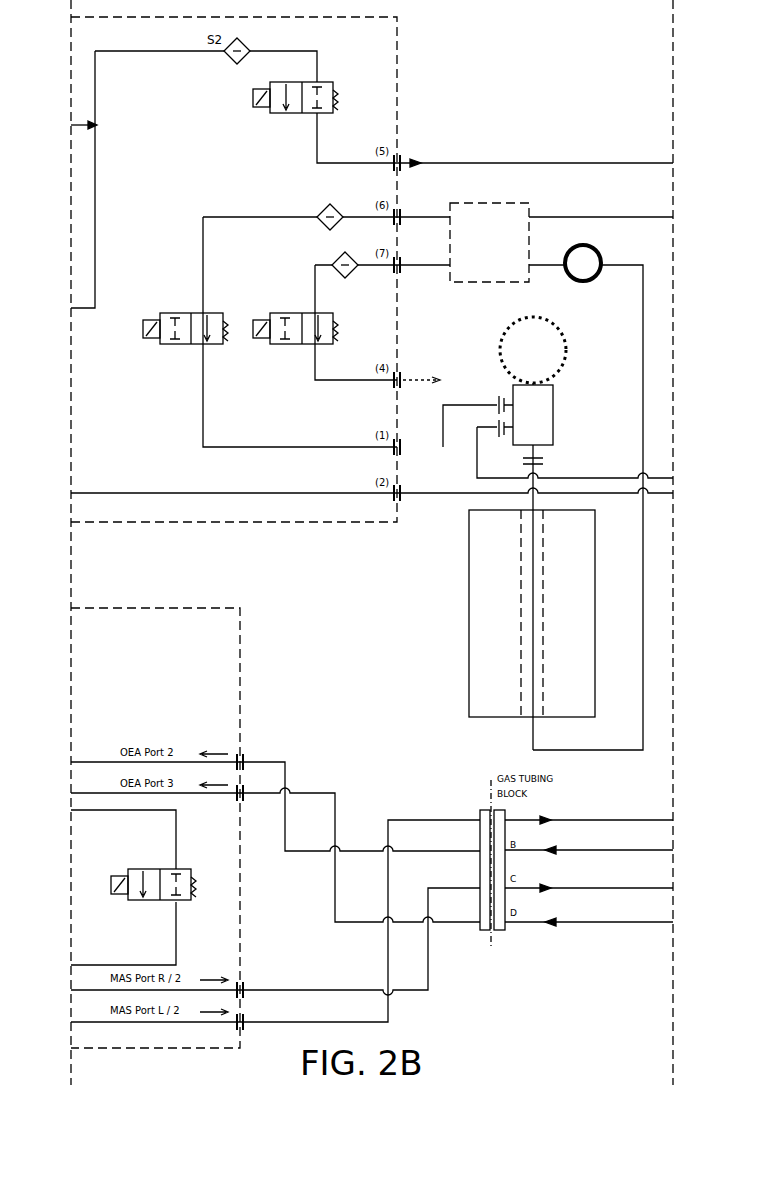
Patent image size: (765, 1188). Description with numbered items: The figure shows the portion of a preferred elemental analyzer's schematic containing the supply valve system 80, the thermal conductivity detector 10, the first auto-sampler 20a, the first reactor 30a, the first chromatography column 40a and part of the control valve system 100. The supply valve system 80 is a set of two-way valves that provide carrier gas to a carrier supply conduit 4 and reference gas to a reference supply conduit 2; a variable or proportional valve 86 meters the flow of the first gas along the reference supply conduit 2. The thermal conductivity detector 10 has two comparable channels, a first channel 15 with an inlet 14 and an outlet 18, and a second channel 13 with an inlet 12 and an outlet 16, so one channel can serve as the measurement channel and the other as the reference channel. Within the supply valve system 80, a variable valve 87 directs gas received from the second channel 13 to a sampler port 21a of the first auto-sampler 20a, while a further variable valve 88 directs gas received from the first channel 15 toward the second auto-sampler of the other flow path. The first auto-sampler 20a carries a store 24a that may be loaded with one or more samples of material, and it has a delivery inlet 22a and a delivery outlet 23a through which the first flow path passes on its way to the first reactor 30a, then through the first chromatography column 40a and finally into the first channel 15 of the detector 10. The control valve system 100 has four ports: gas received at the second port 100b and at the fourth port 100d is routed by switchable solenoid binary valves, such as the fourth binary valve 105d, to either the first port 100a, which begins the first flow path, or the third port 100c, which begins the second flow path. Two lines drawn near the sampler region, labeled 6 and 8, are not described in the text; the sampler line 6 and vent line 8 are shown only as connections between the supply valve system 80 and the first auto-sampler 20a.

The reference supply conduit 2 is at (448, 155).
The carrier supply conduit 4 is at (430, 497).
The sampler gas line 6 is at (445, 449).
The vent line 8 is at (416, 384).
The thermal conductivity detector 10 is at (489, 210).
The inlet 12 is at (585, 213).
The second channel 13 is at (475, 203).
The inlet 14 is at (554, 262).
The first channel 15 is at (460, 285).
The outlet 16 is at (535, 171).
The outlet 18 is at (418, 270).
The first auto-sampler 20a is at (557, 350).
The sampler port 21a is at (496, 387).
The delivery inlet 22a is at (495, 427).
The delivery outlet 23a is at (553, 447).
The store 24a is at (531, 350).
The first reactor 30a is at (469, 608).
The first chromatography column 40a is at (600, 252).
The supply valve system 80 is at (193, 524).
The variable or proportional valve 86 is at (284, 115).
The variable valve 87 is at (173, 346).
The variable valve 88 is at (283, 346).
The control valve system 100 is at (240, 686).
The first port 100a is at (602, 820).
The second port 100b is at (642, 850).
The third port 100c is at (648, 888).
The fourth port 100d is at (597, 922).
The fourth binary valve 105d is at (114, 876).